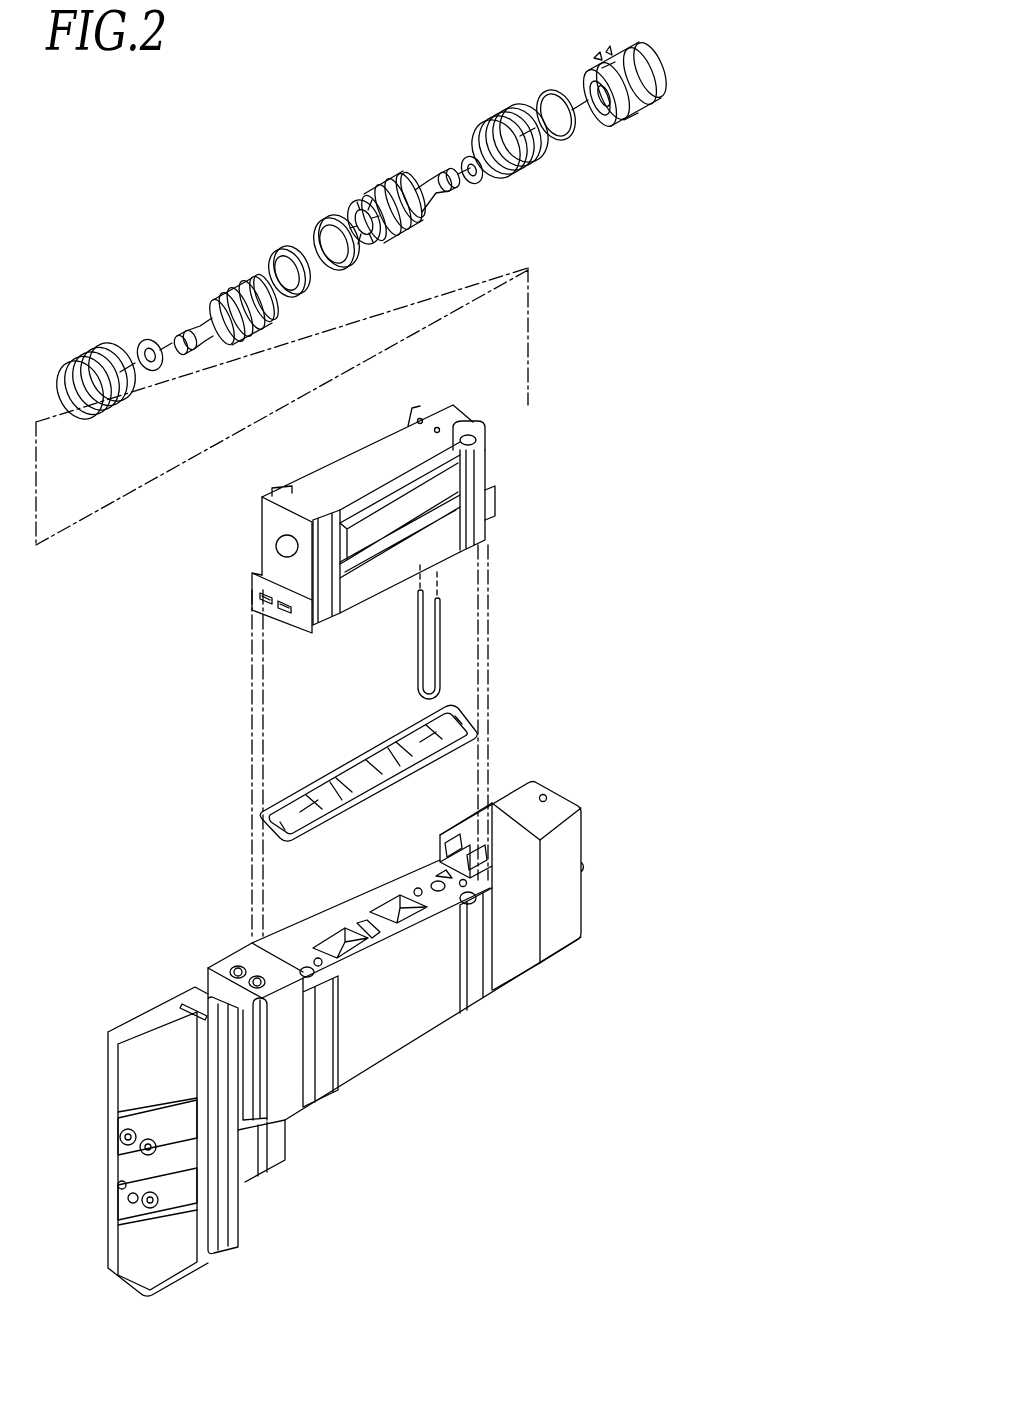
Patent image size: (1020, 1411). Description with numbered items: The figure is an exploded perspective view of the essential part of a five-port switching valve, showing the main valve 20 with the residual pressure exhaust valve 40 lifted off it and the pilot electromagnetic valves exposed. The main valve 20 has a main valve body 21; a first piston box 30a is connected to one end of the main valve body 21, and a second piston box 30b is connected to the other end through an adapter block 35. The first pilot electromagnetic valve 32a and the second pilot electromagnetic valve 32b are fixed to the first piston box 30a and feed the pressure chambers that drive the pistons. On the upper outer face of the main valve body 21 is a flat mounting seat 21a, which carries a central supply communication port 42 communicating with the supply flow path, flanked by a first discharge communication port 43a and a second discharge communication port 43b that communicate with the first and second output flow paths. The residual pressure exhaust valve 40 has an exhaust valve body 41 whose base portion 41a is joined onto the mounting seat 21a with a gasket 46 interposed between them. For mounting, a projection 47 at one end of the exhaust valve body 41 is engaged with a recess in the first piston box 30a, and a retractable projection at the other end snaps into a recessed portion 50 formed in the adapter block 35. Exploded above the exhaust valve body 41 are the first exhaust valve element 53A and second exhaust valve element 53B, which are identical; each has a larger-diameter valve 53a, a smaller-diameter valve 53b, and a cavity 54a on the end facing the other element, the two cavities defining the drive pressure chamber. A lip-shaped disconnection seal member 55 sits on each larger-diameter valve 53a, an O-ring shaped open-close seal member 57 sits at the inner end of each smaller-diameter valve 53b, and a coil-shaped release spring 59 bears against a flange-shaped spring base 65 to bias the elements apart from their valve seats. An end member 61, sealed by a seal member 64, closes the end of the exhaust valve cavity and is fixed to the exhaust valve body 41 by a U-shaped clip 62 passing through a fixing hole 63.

The main valve 20 is at (370, 1148).
The main valve body 21 is at (422, 1048).
The mounting seat 21a is at (300, 962).
The first piston box 30a is at (215, 950).
The second piston box 30b is at (600, 891).
The first pilot electromagnetic valve 32a is at (130, 1085).
The second pilot electromagnetic valve 32b is at (130, 1242).
The adapter block 35 is at (518, 987).
The residual pressure exhaust valve 40 is at (508, 461).
The exhaust valve body 41 is at (349, 466).
The base portion 41a is at (318, 615).
The supply communication port 42 is at (368, 933).
The first discharge communication port 43a is at (336, 935).
The second discharge communication port 43b is at (395, 893).
The gasket 46 is at (326, 782).
The projection 47 is at (280, 606).
The recessed portion 50 is at (443, 848).
The first exhaust valve element 53A is at (236, 272).
The second exhaust valve element 53B is at (402, 176).
The larger-diameter valve 53a is at (244, 322).
The smaller-diameter valve 53b is at (205, 316).
The cavity 54a is at (360, 200).
The disconnection seal member 55 is at (284, 262).
The open-close seal member 57 is at (150, 342).
The release spring 59 is at (100, 372).
The end member 61 is at (634, 50).
The U-shaped clip 62 is at (418, 646).
The fixing hole 63 is at (609, 52).
The seal member 64 is at (569, 145).
The spring base 65 is at (263, 313).